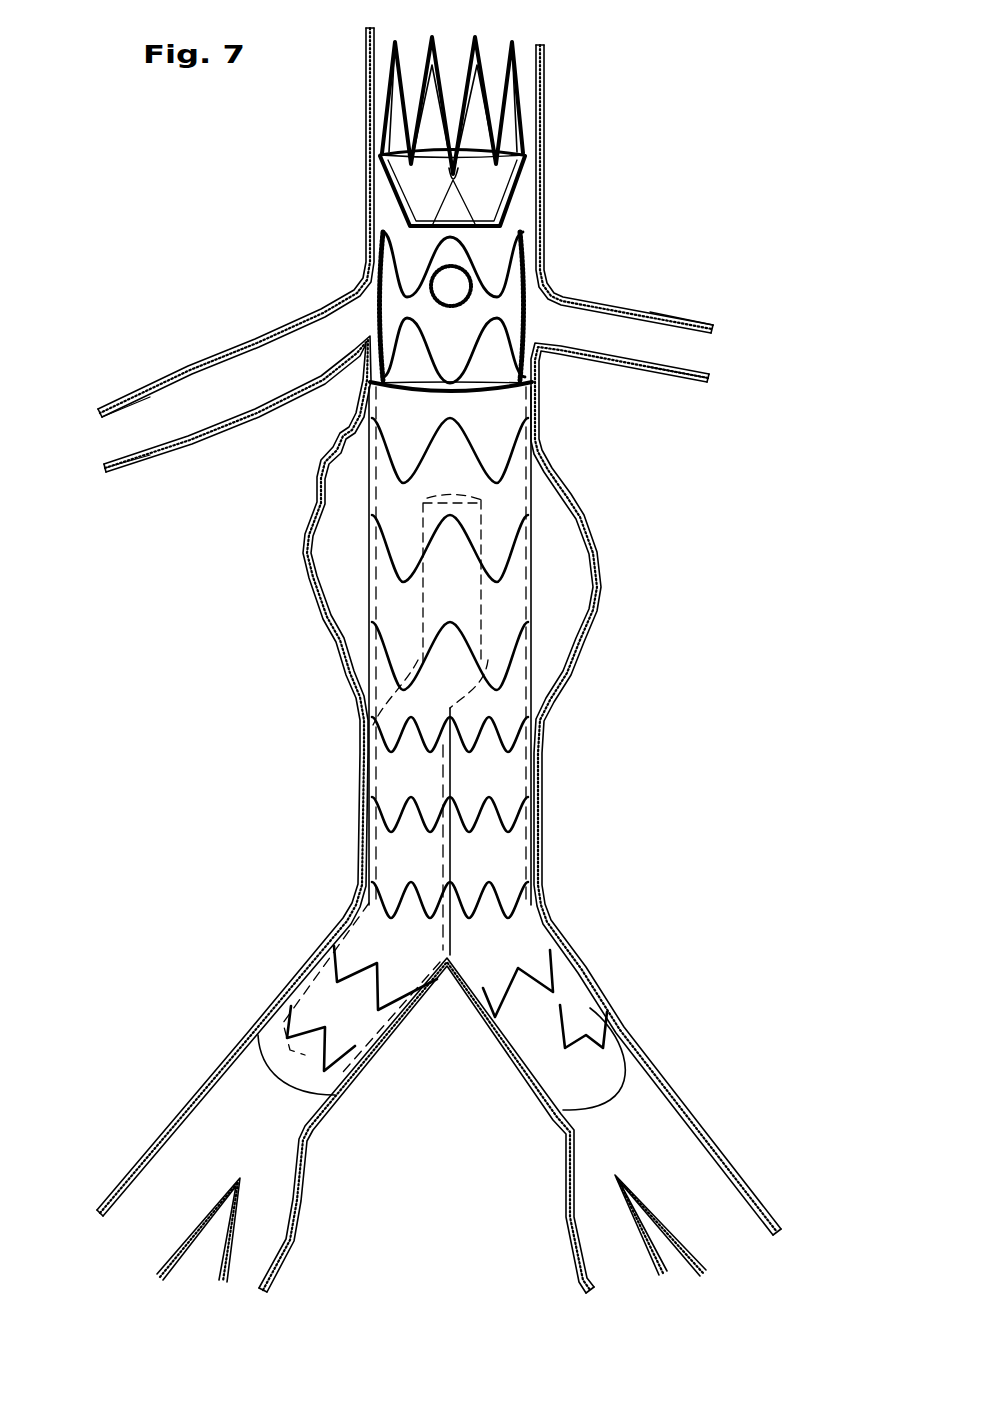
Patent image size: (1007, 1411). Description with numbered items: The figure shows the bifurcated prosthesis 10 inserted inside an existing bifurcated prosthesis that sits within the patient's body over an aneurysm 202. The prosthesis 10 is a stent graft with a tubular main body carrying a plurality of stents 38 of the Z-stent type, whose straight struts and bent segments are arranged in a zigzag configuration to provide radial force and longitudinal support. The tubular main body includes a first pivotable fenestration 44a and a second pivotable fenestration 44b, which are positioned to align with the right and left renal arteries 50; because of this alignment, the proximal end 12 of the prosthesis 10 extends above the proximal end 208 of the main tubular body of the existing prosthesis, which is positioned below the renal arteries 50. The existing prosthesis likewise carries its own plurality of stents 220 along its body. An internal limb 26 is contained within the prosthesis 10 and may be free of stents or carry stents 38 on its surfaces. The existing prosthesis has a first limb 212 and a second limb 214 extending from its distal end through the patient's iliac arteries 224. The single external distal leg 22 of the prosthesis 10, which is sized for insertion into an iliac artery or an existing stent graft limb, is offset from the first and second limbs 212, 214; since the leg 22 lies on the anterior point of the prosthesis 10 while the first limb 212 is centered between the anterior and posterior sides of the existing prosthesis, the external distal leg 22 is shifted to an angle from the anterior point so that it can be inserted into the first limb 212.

The prosthesis 10 is at (527, 201).
The proximal end 12 is at (540, 155).
The stents 38 is at (472, 265).
The first pivotable fenestration 44a is at (387, 318).
The second pivotable fenestration 44b is at (540, 330).
The renal arteries 50 is at (658, 316).
The proximal end 208 is at (470, 391).
The stent 220 is at (482, 450).
The internal limb 26 is at (463, 606).
The aneurysm 202 is at (308, 578).
The external distal leg 22 is at (400, 770).
The first limb 212 is at (293, 1060).
The second limb 214 is at (562, 1008).
The iliac arteries 224 is at (190, 1112).